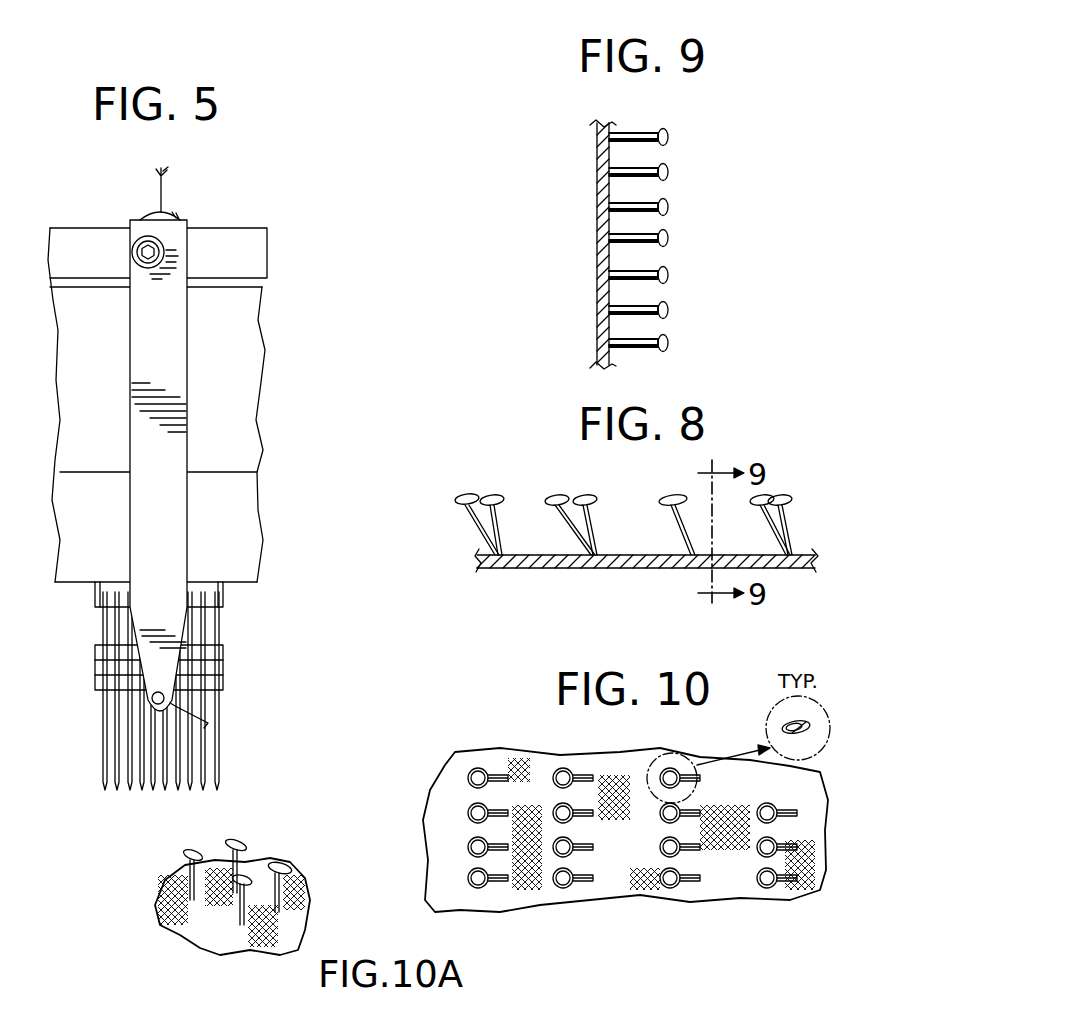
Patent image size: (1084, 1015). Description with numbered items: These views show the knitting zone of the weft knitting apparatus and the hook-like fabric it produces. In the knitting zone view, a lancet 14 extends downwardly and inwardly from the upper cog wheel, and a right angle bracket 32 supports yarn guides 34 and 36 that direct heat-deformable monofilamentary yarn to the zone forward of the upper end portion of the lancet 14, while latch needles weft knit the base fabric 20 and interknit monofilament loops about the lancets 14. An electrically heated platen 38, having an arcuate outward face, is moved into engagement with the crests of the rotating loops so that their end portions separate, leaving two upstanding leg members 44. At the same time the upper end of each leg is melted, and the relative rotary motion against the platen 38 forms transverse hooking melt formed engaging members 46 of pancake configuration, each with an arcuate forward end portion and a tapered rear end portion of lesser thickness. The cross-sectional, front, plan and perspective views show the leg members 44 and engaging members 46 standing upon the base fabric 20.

In FIG. 5, the lancets 14 is at (131, 728).
In FIG. 9, the base fabric 20 is at (597, 190).
In FIG. 8, the base fabric 20 is at (571, 568).
In FIG. 10, the base fabric 20 is at (551, 895).
In FIG. 10A, the base fabric 20 is at (292, 925).
In FIG. 5, the right angle brackets 32 is at (131, 406).
In FIG. 5, the yarn guide 34 is at (155, 206).
In FIG. 5, the yarn guide 36 is at (160, 690).
In FIG. 5, the electrically heated platen 38 is at (166, 193).
In FIG. 9, the leg members 44 is at (630, 169).
In FIG. 8, the leg members 44 is at (591, 528).
In FIG. 10, the leg members 44 is at (490, 816).
In FIG. 10A, the leg members 44 is at (240, 905).
In FIG. 9, the hooking melt formed engaging members 46 is at (667, 172).
In FIG. 8, the hooking melt formed engaging members 46 is at (584, 495).
In FIG. 10, the hooking melt formed engaging members 46 is at (468, 778).
In FIG. 10A, the hooking melt formed engaging members 46 is at (287, 862).